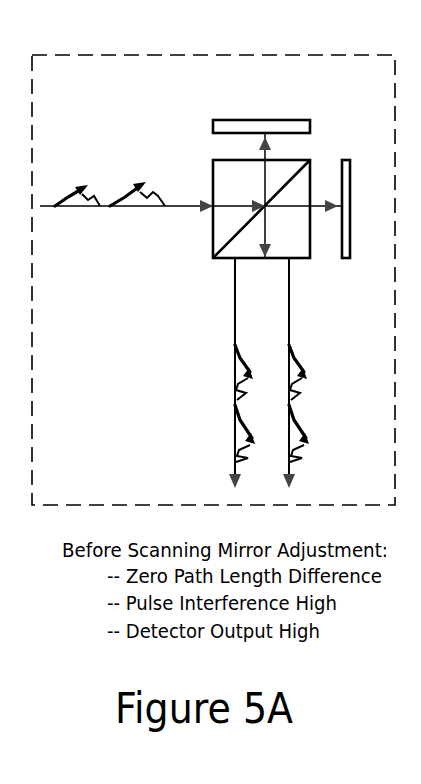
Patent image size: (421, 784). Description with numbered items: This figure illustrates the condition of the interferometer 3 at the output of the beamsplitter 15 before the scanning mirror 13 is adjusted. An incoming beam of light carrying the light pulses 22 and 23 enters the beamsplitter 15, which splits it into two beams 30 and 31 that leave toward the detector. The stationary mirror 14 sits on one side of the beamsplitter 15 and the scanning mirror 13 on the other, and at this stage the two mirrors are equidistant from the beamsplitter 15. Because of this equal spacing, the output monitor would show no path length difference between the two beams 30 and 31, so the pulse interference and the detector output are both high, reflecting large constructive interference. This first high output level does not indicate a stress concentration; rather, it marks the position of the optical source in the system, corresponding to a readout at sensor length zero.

The interferometer 3 is at (285, 55).
The scanning mirror 13 is at (346, 258).
The stationary mirror 14 is at (302, 120).
The beamsplitter 15 is at (213, 247).
The light pulse 22 is at (235, 363).
The light pulse 23 is at (235, 420).
The beam 30 is at (232, 476).
The beam 31 is at (295, 475).